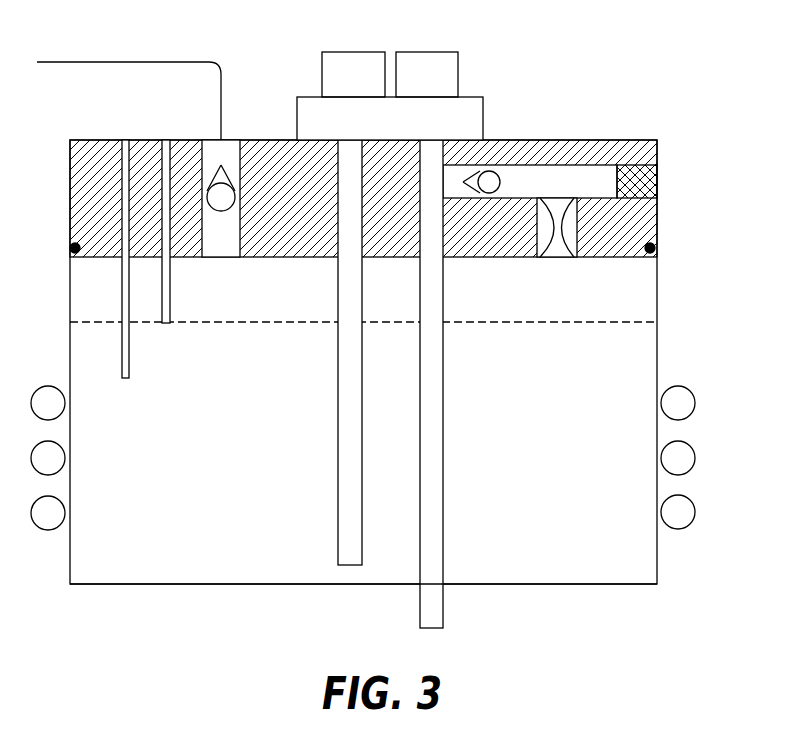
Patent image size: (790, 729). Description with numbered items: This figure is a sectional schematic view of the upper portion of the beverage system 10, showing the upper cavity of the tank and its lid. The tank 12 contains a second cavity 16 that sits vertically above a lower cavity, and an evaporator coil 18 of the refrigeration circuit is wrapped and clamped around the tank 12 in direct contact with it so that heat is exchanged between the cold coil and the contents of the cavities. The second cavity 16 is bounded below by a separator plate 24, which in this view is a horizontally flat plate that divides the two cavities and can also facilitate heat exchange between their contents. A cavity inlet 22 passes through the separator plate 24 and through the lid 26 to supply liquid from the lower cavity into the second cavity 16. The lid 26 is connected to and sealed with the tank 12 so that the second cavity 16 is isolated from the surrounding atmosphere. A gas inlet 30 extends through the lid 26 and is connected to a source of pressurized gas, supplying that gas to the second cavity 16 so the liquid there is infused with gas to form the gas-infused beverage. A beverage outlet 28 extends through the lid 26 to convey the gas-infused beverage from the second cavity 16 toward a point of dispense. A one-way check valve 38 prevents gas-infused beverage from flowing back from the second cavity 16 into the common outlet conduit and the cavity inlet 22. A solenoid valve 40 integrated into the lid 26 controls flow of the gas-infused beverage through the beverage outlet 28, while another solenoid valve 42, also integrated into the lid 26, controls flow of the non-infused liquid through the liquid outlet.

The system 10 is at (602, 606).
The tank 12 is at (657, 545).
The second cavity 16 is at (623, 482).
The evaporator coil 18 is at (694, 404).
The cavity inlet 22 is at (443, 515).
The separator plate 24 is at (277, 586).
The lid 26 is at (269, 155).
The beverage outlet 28 is at (347, 232).
The gas inlet 30 is at (110, 62).
The one-way check valve 38 is at (535, 228).
The solenoid valve 40 is at (337, 68).
The solenoid valve 42 is at (445, 68).